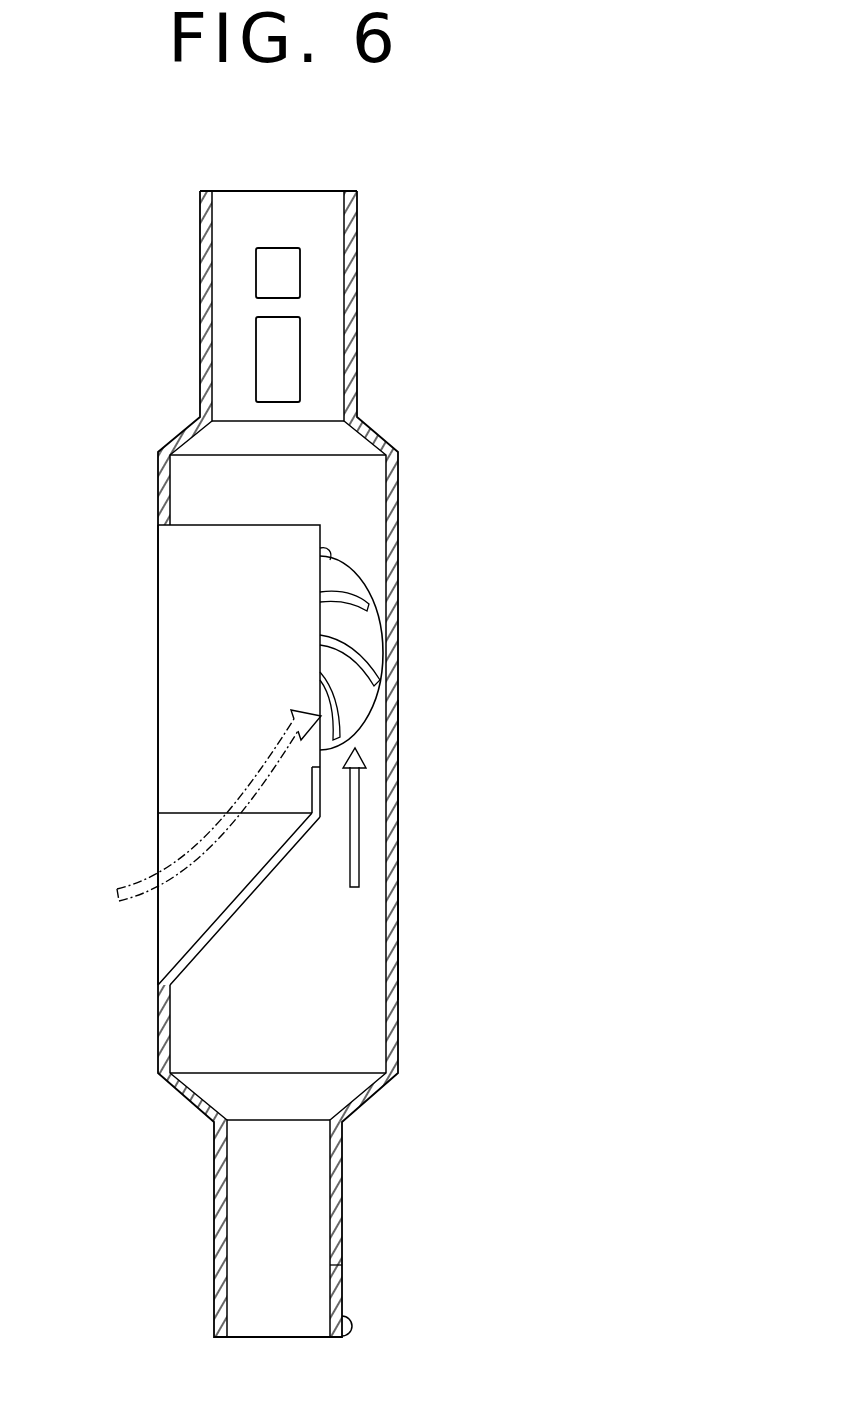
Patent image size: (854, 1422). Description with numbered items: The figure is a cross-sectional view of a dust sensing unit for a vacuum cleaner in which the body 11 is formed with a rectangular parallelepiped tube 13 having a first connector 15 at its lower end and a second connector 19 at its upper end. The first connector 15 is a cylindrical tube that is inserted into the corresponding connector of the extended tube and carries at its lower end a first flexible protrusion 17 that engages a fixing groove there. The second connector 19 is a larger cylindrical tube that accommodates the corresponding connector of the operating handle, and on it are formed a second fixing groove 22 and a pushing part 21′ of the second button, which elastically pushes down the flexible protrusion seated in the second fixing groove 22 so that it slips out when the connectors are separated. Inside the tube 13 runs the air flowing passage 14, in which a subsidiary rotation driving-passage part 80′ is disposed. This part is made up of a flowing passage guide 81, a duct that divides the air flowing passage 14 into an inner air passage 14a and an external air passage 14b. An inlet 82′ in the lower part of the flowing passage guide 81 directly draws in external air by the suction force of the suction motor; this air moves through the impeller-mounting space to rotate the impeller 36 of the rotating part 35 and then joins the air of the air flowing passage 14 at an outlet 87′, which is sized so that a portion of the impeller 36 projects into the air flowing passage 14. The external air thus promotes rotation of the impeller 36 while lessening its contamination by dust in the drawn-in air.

The body 11 is at (422, 888).
The rectangular parallelepiped tube 13 is at (400, 838).
The air flowing passage 14 is at (355, 1015).
The inner air passage 14a is at (360, 770).
The external air passage 14b is at (205, 850).
The first connector 15 is at (214, 1250).
The first flexible protrusion 17 is at (355, 1322).
The second connector 19 is at (200, 264).
The pushing part 21′ is at (288, 353).
The second fixing groove 22 is at (290, 272).
The rotating part 35 is at (375, 558).
The impeller 36 is at (362, 648).
The subsidiary rotation driving-passage part 80′ is at (165, 762).
The flowing passage guide 81 is at (176, 642).
The inlet 82′ is at (182, 908).
The outlet 87′ is at (322, 549).